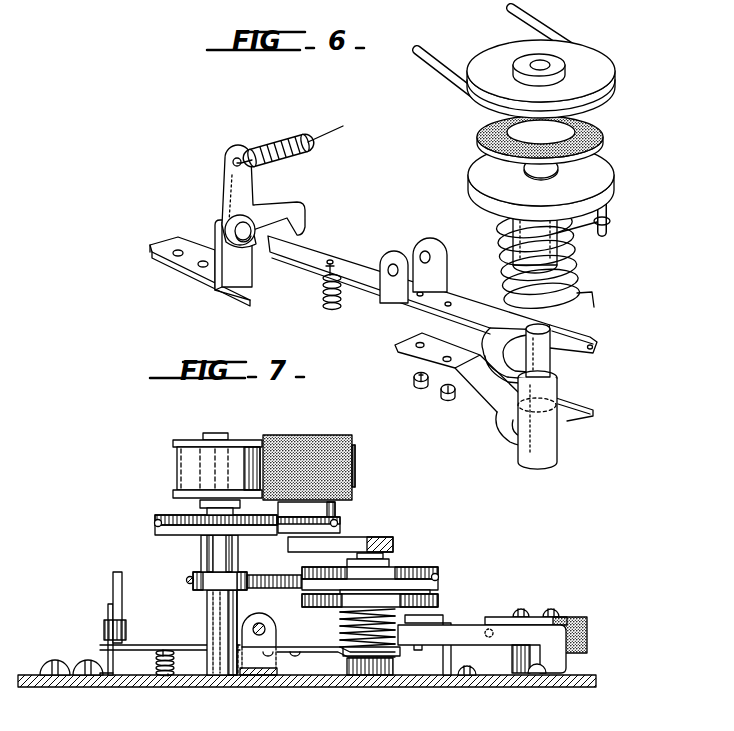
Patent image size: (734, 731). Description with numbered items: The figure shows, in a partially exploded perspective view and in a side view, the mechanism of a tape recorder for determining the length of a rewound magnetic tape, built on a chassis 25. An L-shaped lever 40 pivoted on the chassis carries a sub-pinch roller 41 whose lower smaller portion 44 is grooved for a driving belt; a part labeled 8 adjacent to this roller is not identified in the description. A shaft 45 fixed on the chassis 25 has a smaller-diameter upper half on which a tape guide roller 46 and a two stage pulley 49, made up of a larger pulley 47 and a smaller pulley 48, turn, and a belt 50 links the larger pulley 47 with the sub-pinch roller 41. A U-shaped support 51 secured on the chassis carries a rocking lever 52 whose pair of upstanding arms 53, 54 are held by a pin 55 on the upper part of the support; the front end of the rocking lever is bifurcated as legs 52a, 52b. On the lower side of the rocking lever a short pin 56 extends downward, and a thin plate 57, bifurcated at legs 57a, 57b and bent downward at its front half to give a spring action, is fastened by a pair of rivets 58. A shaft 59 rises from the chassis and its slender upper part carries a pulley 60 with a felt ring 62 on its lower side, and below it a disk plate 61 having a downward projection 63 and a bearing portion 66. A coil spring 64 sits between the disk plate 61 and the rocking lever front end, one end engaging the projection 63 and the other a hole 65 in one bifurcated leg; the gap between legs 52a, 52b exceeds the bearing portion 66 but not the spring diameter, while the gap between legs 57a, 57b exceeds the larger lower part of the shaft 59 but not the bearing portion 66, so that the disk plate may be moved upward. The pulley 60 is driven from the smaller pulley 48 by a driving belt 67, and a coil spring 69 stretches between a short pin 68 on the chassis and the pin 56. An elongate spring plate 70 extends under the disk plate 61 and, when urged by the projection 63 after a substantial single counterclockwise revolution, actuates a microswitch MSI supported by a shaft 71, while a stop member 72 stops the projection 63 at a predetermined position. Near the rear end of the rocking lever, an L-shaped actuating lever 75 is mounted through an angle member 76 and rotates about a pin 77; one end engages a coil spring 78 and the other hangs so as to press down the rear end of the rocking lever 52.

In FIG. 7, the motor housing 8 is at (357, 466).
In FIG. 7, the chassis 25 is at (596, 690).
In FIG. 7, the L-shaped lever 40 is at (380, 538).
In FIG. 7, the sub-pinch roller 41 is at (328, 445).
In FIG. 7, the lower smaller portion 44 is at (336, 507).
In FIG. 7, the shaft 45 is at (211, 605).
In FIG. 7, the tape guide roller 46 is at (178, 468).
In FIG. 7, the larger pulley 47 is at (174, 515).
In FIG. 7, the smaller pulley 48 is at (188, 580).
In FIG. 7, the two stage pulley 49 is at (202, 553).
In FIG. 7, the belt 50 is at (156, 525).
In FIG. 7, the U-shaped support 51 is at (250, 662).
In FIG. 6, the rocking lever 52 is at (346, 246).
In FIG. 7, the rocking lever 52 is at (204, 644).
In FIG. 6, the bifurcated leg 52a is at (587, 334).
In FIG. 6, the bifurcated leg 52b is at (550, 366).
In FIG. 6, the upstanding arm 53 is at (427, 247).
In FIG. 6, the upstanding arm 54 is at (398, 258).
In FIG. 7, the pin 55 is at (259, 622).
In FIG. 6, the short pin 56 is at (328, 270).
In FIG. 7, the short pin 56 is at (163, 648).
In FIG. 6, the thin plate 57 is at (493, 400).
In FIG. 7, the thin plate 57 is at (326, 657).
In FIG. 6, the bifurcated leg 57a is at (592, 413).
In FIG. 6, the bifurcated leg 57b is at (520, 440).
In FIG. 6, the rivets 58 is at (430, 400).
In FIG. 7, the rivets 58 is at (262, 668).
In FIG. 6, the shaft 59 is at (553, 425).
In FIG. 7, the shaft 59 is at (390, 559).
In FIG. 6, the pulley 60 is at (592, 64).
In FIG. 7, the pulley 60 is at (430, 568).
In FIG. 6, the disk plate 61 is at (482, 164).
In FIG. 7, the disk plate 61 is at (438, 603).
In FIG. 6, the felt ring 62 is at (601, 132).
In FIG. 7, the felt ring 62 is at (432, 592).
In FIG. 6, the projection 63 is at (606, 214).
In FIG. 7, the projection 63 is at (418, 650).
In FIG. 6, the coil spring 64 is at (574, 266).
In FIG. 7, the coil spring 64 is at (340, 620).
In FIG. 6, the hole 65 is at (598, 349).
In FIG. 6, the bearing portion 66 is at (520, 240).
In FIG. 6, the driving belt 67 is at (534, 30).
In FIG. 7, the driving belt 67 is at (282, 575).
In FIG. 7, the short pin 68 is at (168, 676).
In FIG. 6, the coil spring 69 is at (340, 308).
In FIG. 7, the coil spring 69 is at (155, 661).
In FIG. 7, the elongate spring plate 70 is at (565, 662).
In FIG. 7, the shaft 71 is at (512, 660).
In FIG. 7, the stop member 72 is at (486, 618).
In FIG. 6, the L-shaped actuating lever 75 is at (232, 186).
In FIG. 7, the L-shaped actuating lever 75 is at (112, 586).
In FIG. 6, the angle member 76 is at (236, 276).
In FIG. 7, the angle member 76 is at (107, 611).
In FIG. 6, the pin 77 is at (250, 244).
In FIG. 7, the pin 77 is at (103, 632).
In FIG. 6, the coil spring 78 is at (280, 142).
In FIG. 7, the microswitch MSI is at (587, 636).